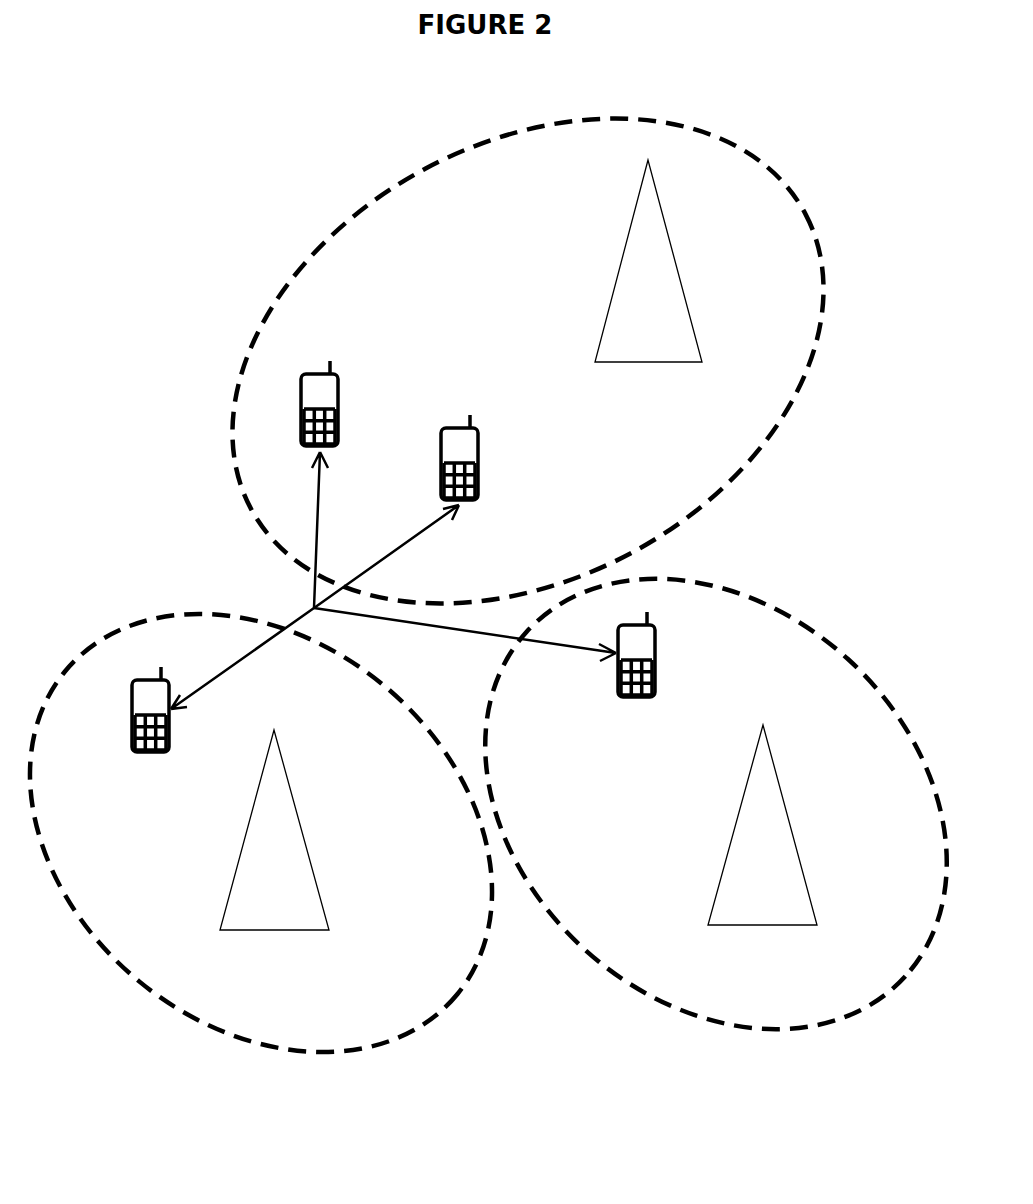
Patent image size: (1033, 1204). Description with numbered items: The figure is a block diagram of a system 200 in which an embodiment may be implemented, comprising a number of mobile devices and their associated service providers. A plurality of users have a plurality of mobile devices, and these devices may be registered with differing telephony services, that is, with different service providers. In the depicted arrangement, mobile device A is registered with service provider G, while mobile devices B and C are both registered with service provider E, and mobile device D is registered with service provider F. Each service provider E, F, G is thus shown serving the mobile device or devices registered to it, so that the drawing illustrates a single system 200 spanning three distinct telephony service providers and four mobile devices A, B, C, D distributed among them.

The system 200 is at (228, 190).
The mobile device A is at (167, 719).
The mobile device B is at (338, 395).
The mobile device C is at (480, 451).
The mobile device D is at (653, 648).
The service provider E is at (651, 261).
The service provider F is at (765, 825).
The service provider G is at (279, 830).